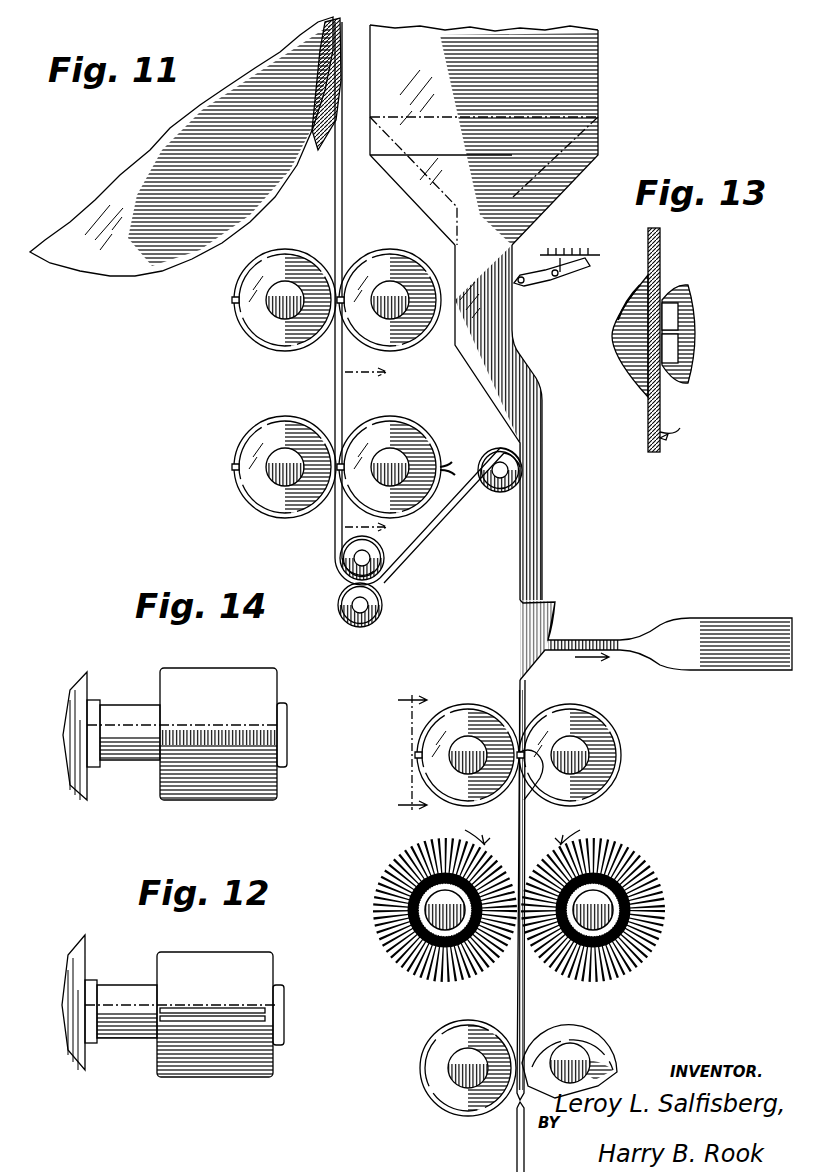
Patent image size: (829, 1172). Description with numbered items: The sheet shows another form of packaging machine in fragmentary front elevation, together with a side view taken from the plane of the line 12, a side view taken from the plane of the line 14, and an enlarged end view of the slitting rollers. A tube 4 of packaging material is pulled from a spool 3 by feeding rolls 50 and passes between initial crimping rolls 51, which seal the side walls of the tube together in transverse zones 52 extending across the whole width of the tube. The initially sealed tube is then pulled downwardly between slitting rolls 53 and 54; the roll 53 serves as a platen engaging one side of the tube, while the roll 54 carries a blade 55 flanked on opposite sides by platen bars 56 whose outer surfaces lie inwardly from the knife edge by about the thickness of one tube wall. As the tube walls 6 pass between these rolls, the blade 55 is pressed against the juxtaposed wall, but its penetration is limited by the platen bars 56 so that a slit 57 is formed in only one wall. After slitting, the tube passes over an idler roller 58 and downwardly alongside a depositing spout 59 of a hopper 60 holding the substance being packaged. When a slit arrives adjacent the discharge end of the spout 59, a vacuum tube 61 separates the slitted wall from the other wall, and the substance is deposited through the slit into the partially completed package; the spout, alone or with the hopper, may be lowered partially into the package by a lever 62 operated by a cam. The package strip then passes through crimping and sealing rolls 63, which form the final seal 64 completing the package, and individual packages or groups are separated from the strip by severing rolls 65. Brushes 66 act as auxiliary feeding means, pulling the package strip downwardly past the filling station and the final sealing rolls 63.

In FIG. 11, the spool 3 is at (127, 272).
In FIG. 11, the tube 4 is at (348, 225).
In FIG. 13, the tube 4 is at (678, 425).
In FIG. 13, the tube walls 6 is at (660, 240).
In FIG. 11, the line 12- 12 is at (383, 456).
In FIG. 11, the line 14- 14 is at (410, 752).
In FIG. 11, the feeding rolls 50 is at (340, 590).
In FIG. 11, the initial crimping rolls 51 is at (397, 270).
In FIG. 11, the transverse zones 52 is at (380, 572).
In FIG. 13, the transverse zones 52 is at (626, 385).
In FIG. 11, the slitting roll 53 is at (262, 446).
In FIG. 11, the slitting roll 54 is at (386, 425).
In FIG. 13, the slitting roll 54 is at (700, 316).
In FIG. 12, the slitting roll 54 is at (200, 1076).
In FIG. 11, the blade 55 is at (445, 480).
In FIG. 13, the blade 55 is at (686, 348).
In FIG. 12, the blade 55 is at (270, 1015).
In FIG. 11, the platen bars 56 is at (442, 465).
In FIG. 13, the platen bars 56 is at (672, 303).
In FIG. 12, the platen bars 56 is at (215, 1005).
In FIG. 13, the slit 57 is at (638, 308).
In FIG. 11, the idler roller 58 is at (500, 492).
In FIG. 11, the depositing spout 59 is at (540, 540).
In FIG. 11, the hopper 60 is at (555, 178).
In FIG. 11, the vacuum tube 61 is at (565, 636).
In FIG. 11, the lever 62 is at (582, 262).
In FIG. 11, the crimping and sealing rolls 63 is at (600, 746).
In FIG. 14, the crimping and sealing rolls 63 is at (258, 700).
In FIG. 11, the final seal 64 is at (535, 780).
In FIG. 11, the severing rolls 65 is at (600, 1046).
In FIG. 11, the brushes 66 is at (668, 910).